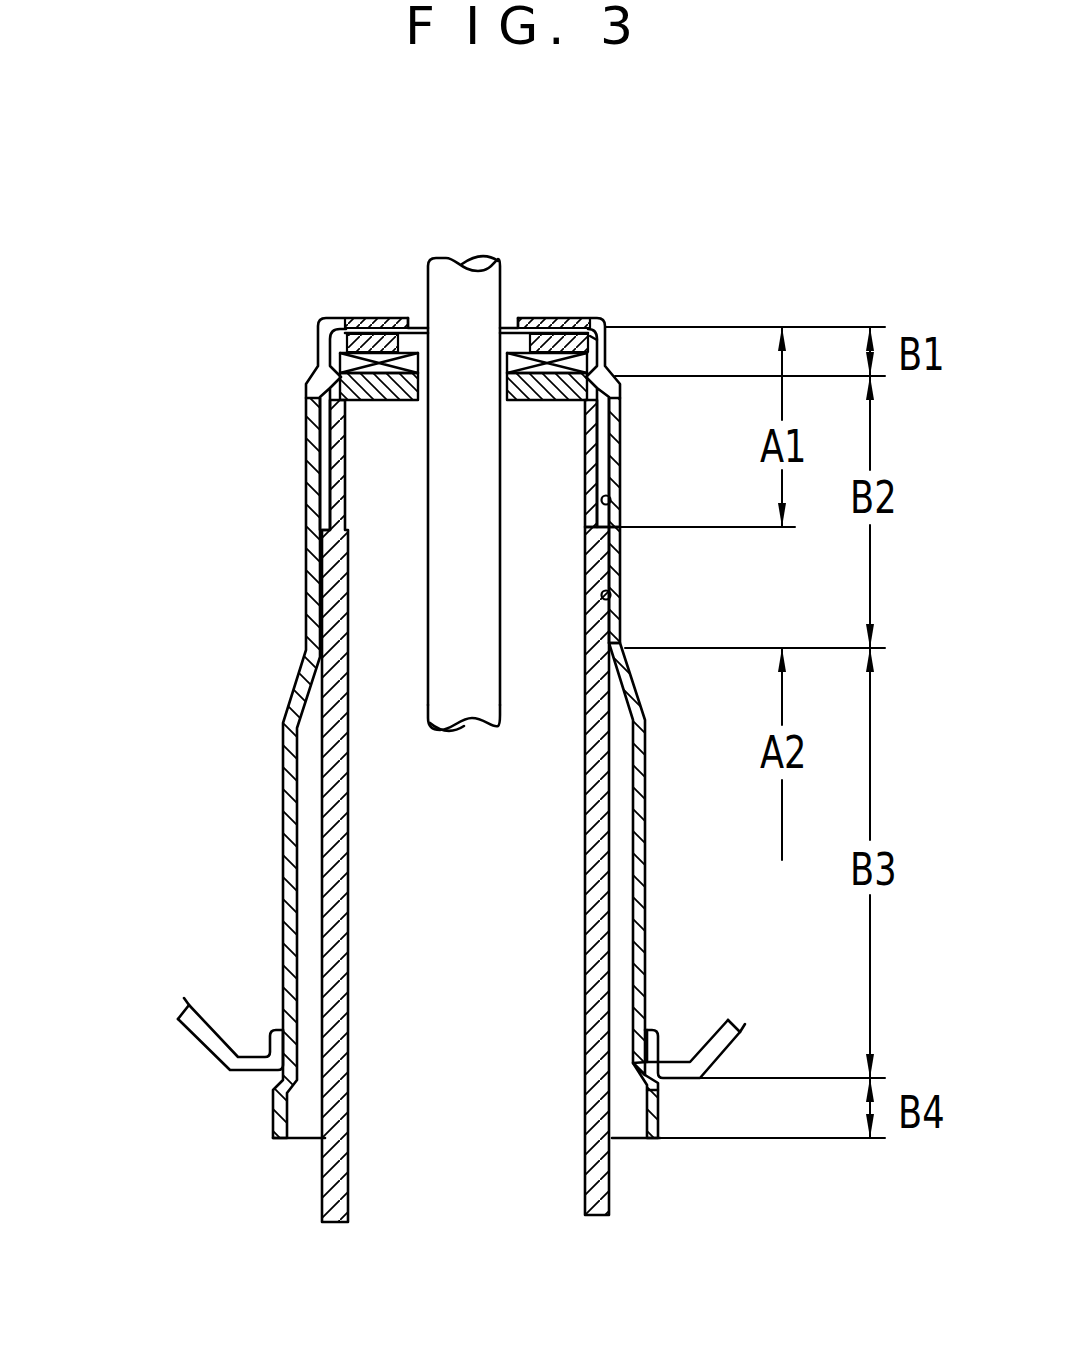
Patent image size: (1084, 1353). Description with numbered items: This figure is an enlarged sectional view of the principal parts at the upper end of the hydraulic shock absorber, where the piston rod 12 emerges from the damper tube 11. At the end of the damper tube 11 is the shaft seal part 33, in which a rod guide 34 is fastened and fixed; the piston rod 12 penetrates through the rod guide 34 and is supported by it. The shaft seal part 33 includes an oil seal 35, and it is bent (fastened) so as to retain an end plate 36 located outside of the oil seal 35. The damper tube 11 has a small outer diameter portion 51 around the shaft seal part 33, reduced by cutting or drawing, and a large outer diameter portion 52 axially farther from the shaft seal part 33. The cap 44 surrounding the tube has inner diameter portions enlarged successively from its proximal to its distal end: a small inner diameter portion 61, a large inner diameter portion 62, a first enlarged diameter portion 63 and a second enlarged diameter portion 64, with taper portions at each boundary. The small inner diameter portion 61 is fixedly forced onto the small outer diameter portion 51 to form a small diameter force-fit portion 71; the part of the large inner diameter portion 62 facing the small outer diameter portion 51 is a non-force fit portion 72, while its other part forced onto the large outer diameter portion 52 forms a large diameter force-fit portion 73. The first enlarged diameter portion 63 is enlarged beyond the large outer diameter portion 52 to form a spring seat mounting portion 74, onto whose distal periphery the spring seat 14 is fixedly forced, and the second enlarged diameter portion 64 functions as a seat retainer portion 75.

The damper tube 11 is at (254, 824).
The piston rod 12 is at (439, 435).
The spring seat 14 is at (412, 1068).
The shaft seal part 33 is at (393, 345).
The rod guide 34 is at (463, 437).
The oil seal 35 is at (398, 354).
The end plate 36 is at (450, 281).
The cap 44 is at (218, 768).
The small outer diameter portion 51 is at (553, 463).
The large outer diameter portion 52 is at (544, 871).
The small inner diameter portion 61 is at (661, 391).
The large inner diameter portion 62 is at (663, 585).
The first enlarged diameter portion 63 is at (680, 859).
The second enlarged diameter portion 64 is at (656, 1143).
The small diameter force-fit portion 71 is at (618, 278).
The non-force fit portion 72 is at (661, 501).
The large diameter force-fit portion 73 is at (662, 614).
The spring seat mounting portion 74 is at (564, 1045).
The seat retainer portion 75 is at (569, 1102).